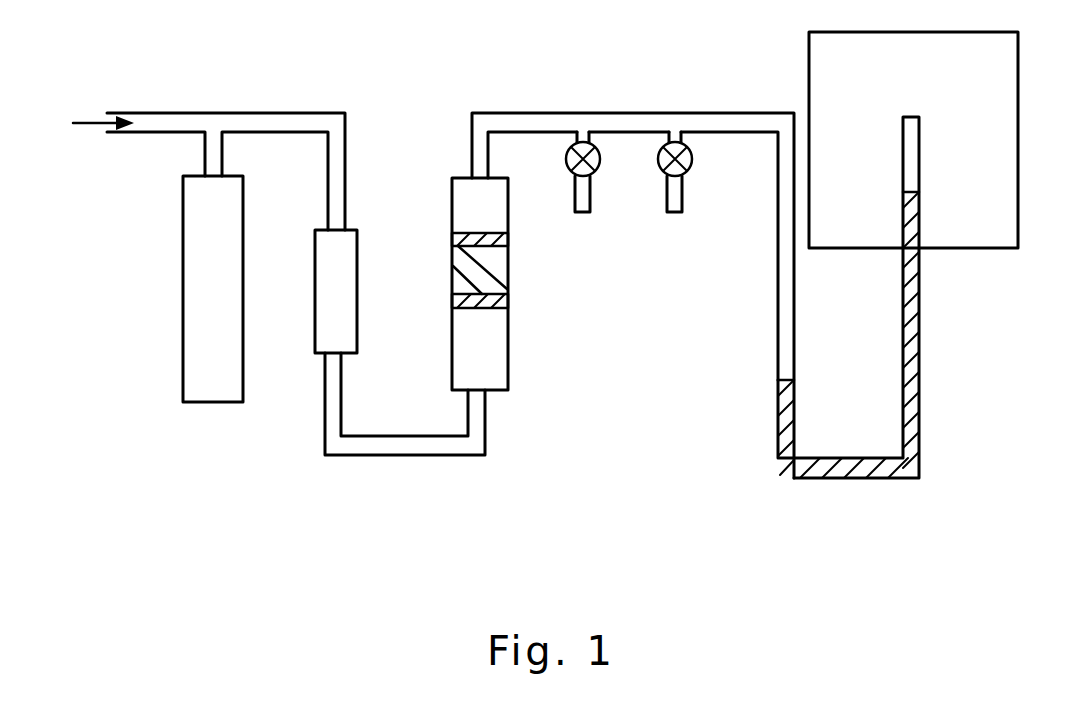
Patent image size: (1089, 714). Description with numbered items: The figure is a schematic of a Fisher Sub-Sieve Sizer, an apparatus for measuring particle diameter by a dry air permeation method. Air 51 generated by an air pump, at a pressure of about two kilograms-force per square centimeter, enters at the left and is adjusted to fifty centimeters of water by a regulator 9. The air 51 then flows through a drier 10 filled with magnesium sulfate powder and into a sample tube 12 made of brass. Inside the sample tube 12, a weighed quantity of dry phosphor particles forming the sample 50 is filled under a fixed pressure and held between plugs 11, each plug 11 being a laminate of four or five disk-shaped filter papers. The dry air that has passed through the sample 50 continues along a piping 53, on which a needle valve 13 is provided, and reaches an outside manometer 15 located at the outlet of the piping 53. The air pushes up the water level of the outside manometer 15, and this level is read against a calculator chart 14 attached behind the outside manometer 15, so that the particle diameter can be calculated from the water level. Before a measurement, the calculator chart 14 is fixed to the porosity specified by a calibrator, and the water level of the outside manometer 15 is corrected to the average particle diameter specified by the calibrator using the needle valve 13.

The air 51 is at (103, 121).
The regulator 9 is at (187, 322).
The drier 10 is at (352, 240).
The phosphor particles (sample) 50 is at (466, 265).
The plug 11 is at (508, 238).
The sample tube 12 is at (508, 271).
The needle valve 13 is at (676, 140).
The piping 53 is at (748, 113).
The calculator chart 14 is at (942, 237).
The outside manometer 15 is at (913, 405).